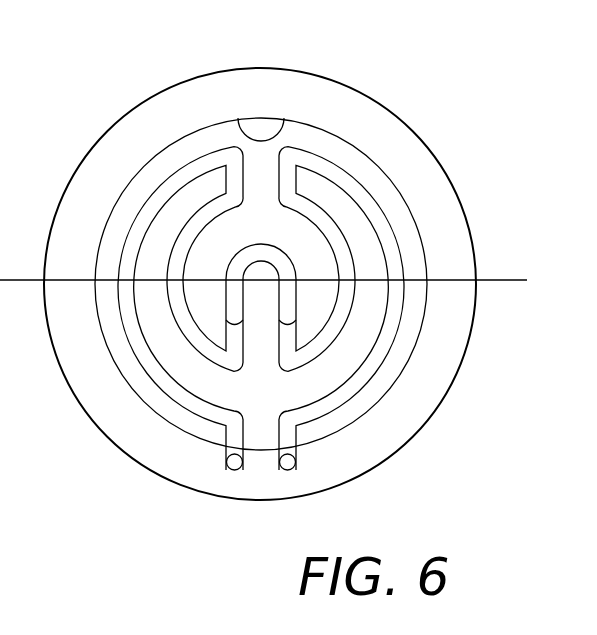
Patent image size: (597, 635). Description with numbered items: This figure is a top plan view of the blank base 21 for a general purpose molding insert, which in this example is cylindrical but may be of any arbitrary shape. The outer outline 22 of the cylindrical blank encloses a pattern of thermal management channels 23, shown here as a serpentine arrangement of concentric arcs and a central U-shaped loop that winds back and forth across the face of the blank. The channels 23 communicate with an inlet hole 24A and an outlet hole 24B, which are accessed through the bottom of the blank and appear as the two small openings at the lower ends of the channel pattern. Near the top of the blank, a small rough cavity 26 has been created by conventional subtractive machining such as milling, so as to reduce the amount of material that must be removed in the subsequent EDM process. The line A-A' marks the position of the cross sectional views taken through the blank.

The blank base 21 is at (263, 280).
The housing outer wall 22 is at (357, 118).
The thermal management channels 23 is at (378, 352).
The inlet hole 24A is at (233, 470).
The outlet hole 24B is at (289, 470).
The rough cavity 26 is at (228, 128).